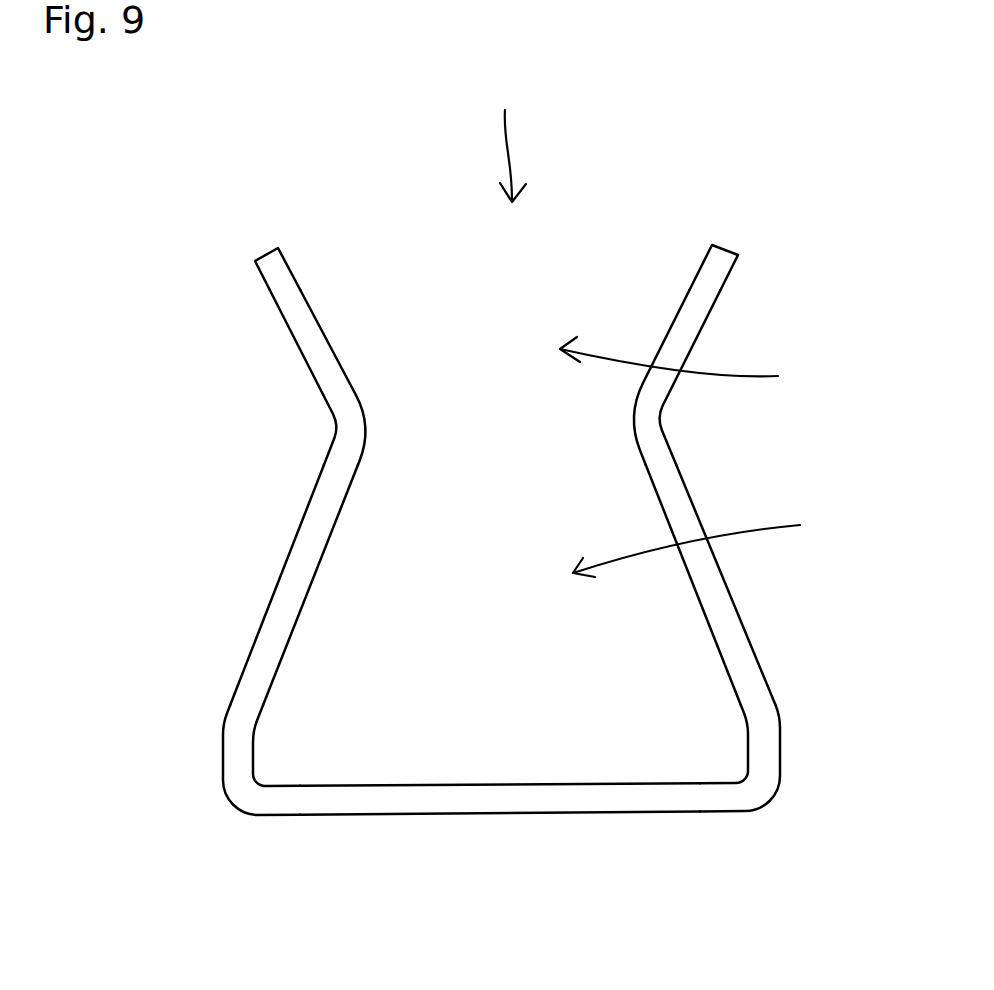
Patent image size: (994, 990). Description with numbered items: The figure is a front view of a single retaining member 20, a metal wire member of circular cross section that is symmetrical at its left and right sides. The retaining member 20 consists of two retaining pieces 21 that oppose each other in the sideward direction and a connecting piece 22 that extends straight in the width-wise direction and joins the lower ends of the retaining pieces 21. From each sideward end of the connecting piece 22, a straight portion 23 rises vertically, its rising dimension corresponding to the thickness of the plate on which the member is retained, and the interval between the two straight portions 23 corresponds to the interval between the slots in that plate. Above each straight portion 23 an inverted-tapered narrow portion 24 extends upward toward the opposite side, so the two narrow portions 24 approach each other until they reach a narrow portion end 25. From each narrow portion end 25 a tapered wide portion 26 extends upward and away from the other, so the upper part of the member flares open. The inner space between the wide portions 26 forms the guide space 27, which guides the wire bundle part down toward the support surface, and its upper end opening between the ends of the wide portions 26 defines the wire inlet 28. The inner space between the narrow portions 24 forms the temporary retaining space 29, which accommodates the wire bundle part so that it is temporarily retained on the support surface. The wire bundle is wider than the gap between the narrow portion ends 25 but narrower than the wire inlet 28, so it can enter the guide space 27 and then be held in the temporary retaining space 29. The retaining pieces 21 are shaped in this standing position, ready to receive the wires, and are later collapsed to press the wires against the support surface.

The retaining member 20 is at (506, 538).
The retaining piece 21 is at (266, 247).
The connecting piece 22 is at (492, 803).
The straight portion 23 is at (224, 750).
The narrow portion 24 is at (282, 593).
The narrow portion end 25 is at (345, 426).
The wide portion 26 is at (293, 322).
The guide space 27 is at (690, 366).
The wire inlet 28 is at (509, 137).
The temporary retaining space 29 is at (708, 542).